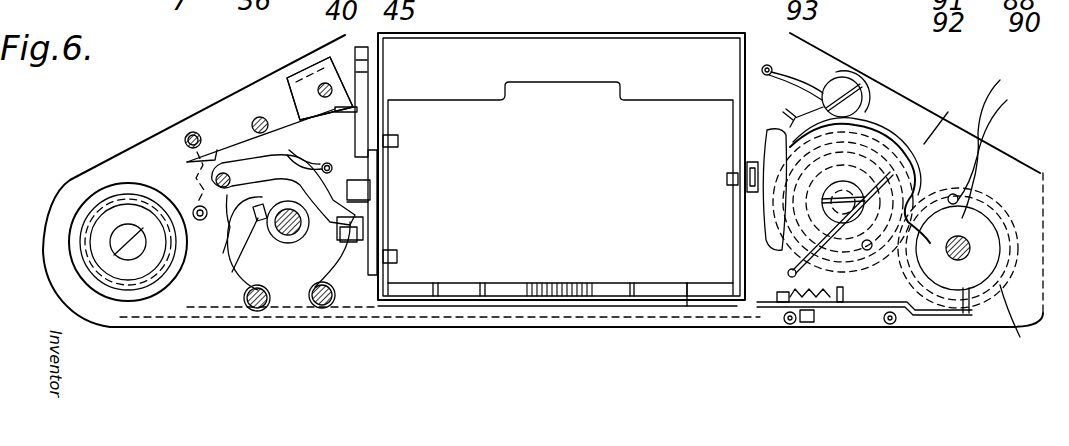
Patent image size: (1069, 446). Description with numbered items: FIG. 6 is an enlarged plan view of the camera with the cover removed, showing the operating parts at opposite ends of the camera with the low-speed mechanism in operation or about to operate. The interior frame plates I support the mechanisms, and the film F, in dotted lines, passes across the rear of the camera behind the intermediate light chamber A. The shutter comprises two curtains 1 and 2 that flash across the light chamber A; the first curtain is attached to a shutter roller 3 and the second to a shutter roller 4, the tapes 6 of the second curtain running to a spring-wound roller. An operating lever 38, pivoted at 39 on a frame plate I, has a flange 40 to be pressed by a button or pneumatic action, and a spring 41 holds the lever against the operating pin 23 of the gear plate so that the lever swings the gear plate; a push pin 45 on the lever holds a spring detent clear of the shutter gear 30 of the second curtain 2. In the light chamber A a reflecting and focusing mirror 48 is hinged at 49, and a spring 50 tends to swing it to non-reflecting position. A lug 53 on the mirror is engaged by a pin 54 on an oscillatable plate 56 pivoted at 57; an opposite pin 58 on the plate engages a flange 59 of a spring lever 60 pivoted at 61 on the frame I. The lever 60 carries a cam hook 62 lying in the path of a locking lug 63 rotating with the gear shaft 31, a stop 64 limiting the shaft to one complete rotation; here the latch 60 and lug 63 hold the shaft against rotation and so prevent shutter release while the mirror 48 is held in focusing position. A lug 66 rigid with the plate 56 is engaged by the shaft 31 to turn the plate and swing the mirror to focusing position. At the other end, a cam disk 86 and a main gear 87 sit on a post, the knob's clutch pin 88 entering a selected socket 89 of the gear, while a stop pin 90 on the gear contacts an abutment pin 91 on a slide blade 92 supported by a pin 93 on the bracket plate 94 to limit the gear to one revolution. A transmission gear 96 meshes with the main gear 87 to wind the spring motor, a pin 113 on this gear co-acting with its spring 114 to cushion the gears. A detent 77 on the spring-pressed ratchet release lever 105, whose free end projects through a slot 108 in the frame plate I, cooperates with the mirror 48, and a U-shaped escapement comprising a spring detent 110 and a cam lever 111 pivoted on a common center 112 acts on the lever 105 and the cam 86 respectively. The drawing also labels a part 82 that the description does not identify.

The shutter curtain 1 is at (460, 308).
The shutter curtain 2 is at (398, 316).
The shutter roller 3 is at (320, 308).
The shutter roller 4 is at (255, 311).
The tapes 6 is at (212, 224).
The operating pin 23 is at (191, 132).
The shutter gear 30 is at (270, 81).
The gear shaft 31 is at (303, 233).
The operating lever 38 is at (292, 80).
The pivot 39 is at (262, 117).
The flange 40 is at (302, 62).
The spring 41 is at (235, 140).
The push pin 45 is at (328, 86).
The focusing mirror 48 is at (569, 90).
The hinge 49 is at (687, 306).
The spring 50 is at (575, 265).
The lug 53 is at (397, 270).
The pin 54 is at (395, 253).
The oscillatable plate 56 is at (370, 207).
The pivot 57 is at (377, 220).
The pin 58 is at (352, 242).
The flange 59 is at (292, 283).
The spring lever 60 is at (283, 190).
The pivot 61 is at (200, 213).
The cam hook 62 is at (322, 166).
The locking lug 63 is at (225, 243).
The stop 64 is at (227, 251).
The lug 66 is at (358, 190).
The detent 77 is at (727, 185).
The hub 82 is at (962, 238).
The cam disk 86 is at (993, 227).
The main gear 87 is at (1018, 324).
The clutch pin 88 is at (953, 194).
The sockets 89 is at (997, 140).
The stop pin 90 is at (997, 133).
The abutment pin 91 is at (966, 313).
The slide blade 92 is at (950, 315).
The pin 93 is at (810, 322).
The bracket plate 94 is at (862, 315).
The transmission gear 96 is at (882, 143).
The ratchet release lever 105 is at (745, 163).
The slot 108 is at (755, 250).
The spring detent 110 is at (766, 222).
The cam lever 111 is at (954, 119).
The common center 112 is at (842, 90).
The pin 113 is at (870, 250).
The spring 114 is at (840, 218).
The light chamber A is at (561, 166).
The film F is at (187, 305).
The frame plates I is at (930, 112).